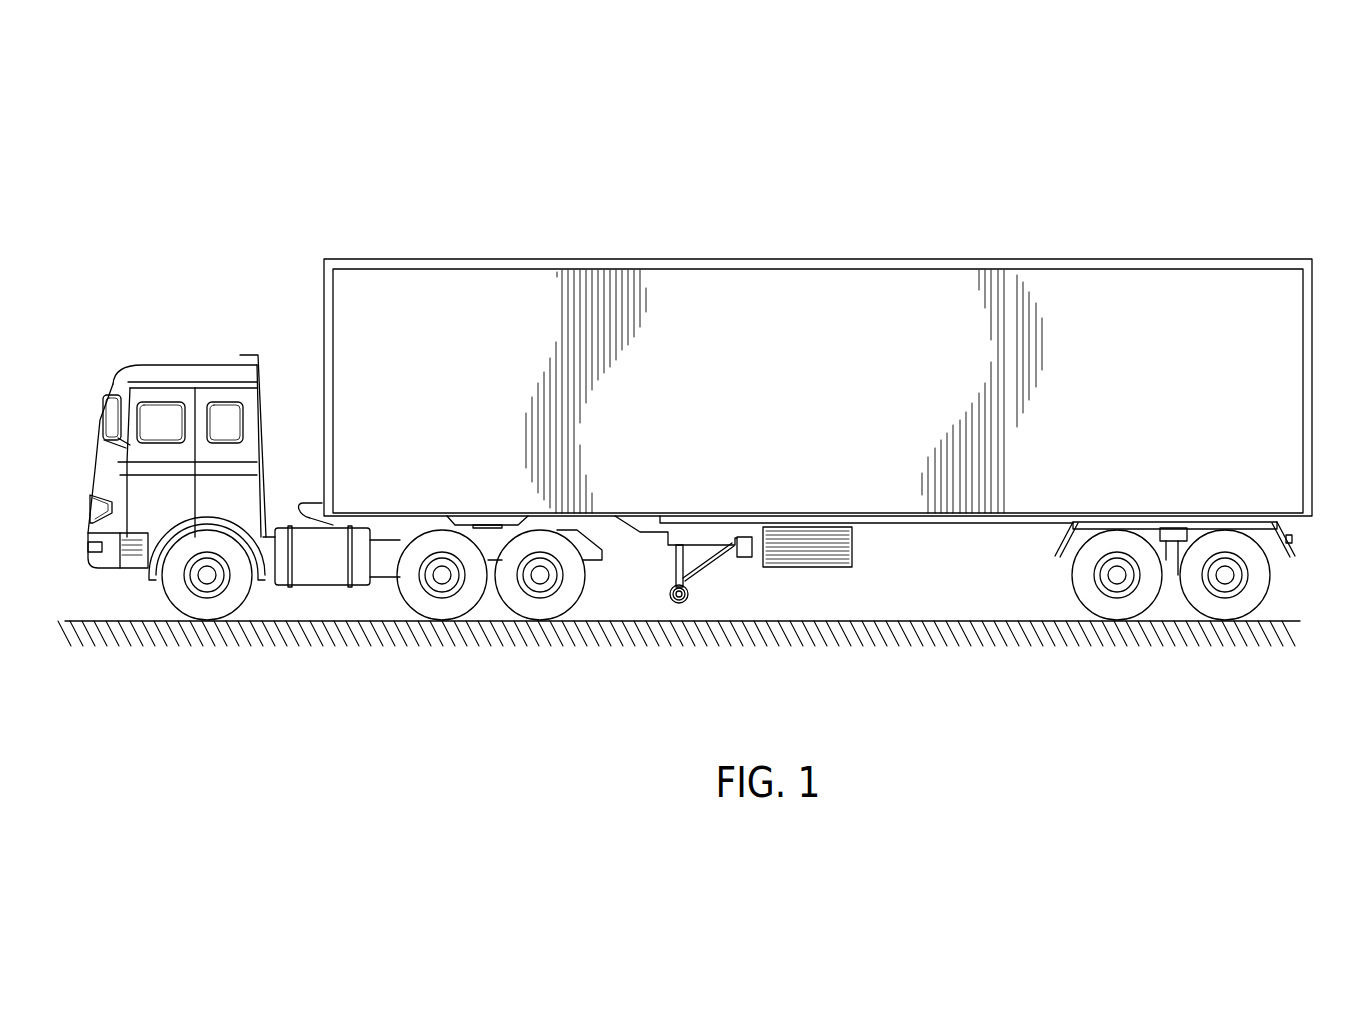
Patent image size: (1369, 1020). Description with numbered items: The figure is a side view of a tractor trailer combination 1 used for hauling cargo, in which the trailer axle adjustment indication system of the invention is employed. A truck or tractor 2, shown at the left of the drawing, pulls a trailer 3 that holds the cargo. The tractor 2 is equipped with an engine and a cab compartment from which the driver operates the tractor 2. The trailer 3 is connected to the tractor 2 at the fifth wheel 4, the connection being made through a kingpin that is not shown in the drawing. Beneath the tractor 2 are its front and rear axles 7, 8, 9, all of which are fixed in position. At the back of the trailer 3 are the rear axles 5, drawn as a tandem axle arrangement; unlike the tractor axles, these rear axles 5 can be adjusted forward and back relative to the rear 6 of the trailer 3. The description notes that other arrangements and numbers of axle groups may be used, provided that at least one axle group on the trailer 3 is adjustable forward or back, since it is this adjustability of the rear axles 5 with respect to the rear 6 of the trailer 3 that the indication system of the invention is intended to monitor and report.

The tractor trailer combination 1 is at (518, 167).
The tractor 2 is at (103, 458).
The trailer 3 is at (688, 278).
The fifth wheel 4 is at (487, 526).
The rear axles 5 is at (1080, 618).
The rear of trailer 6 is at (1313, 303).
The front axle of tractor 7 is at (190, 605).
The rear axle of tractor 8 is at (425, 605).
The rear axle of tractor 9 is at (558, 605).